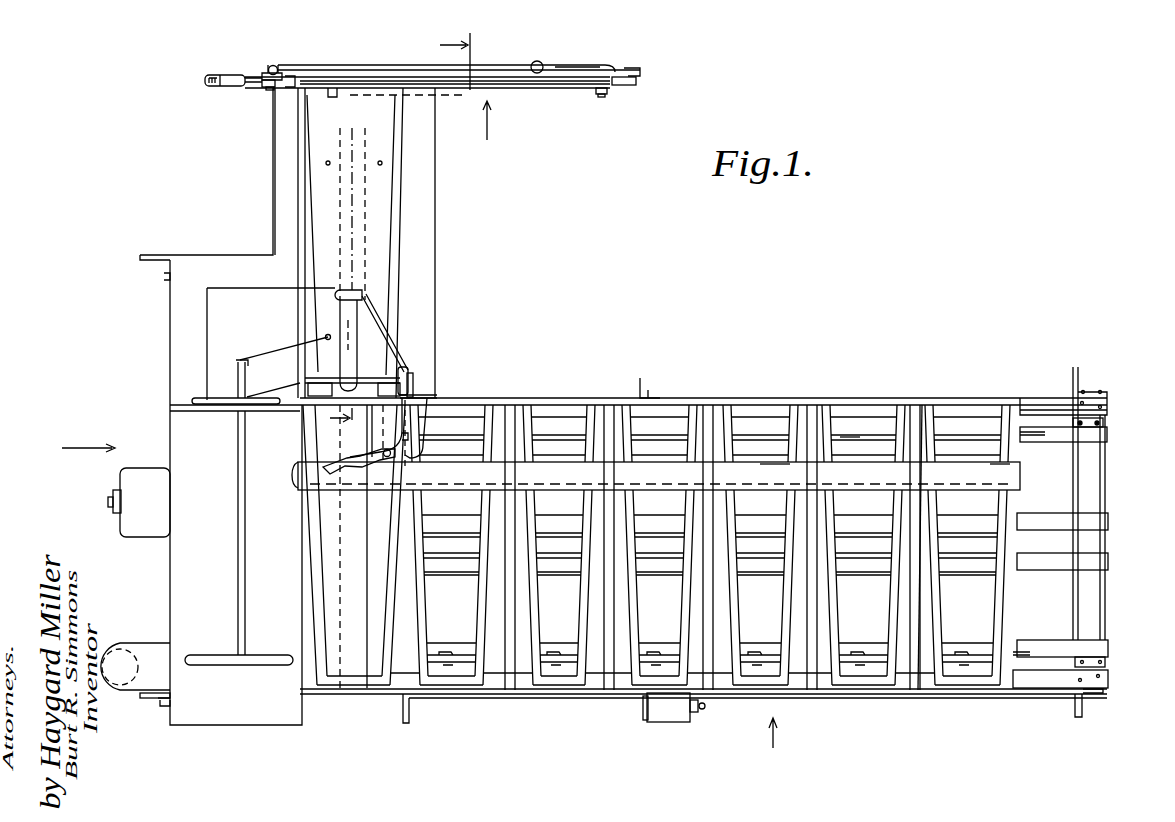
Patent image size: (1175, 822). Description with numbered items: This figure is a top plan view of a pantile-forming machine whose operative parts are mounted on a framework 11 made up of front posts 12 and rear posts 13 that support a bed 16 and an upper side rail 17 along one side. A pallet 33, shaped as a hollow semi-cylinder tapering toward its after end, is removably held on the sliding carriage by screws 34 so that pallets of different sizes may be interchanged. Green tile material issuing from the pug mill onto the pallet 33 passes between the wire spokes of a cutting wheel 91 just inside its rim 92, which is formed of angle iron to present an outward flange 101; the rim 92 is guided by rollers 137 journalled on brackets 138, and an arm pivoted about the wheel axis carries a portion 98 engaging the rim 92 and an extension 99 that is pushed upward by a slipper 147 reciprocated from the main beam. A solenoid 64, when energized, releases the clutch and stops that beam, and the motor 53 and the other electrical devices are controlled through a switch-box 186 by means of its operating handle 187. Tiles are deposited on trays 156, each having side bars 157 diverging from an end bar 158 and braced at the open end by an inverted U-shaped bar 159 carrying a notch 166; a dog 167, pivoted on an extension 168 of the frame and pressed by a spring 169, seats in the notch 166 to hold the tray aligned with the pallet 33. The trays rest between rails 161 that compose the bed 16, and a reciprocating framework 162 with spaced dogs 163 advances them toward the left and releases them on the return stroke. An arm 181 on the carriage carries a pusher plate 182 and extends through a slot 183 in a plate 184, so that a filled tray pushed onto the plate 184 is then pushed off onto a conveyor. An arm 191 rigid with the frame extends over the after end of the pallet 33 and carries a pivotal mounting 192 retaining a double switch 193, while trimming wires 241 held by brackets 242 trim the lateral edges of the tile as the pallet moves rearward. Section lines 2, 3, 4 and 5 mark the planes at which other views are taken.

The section line 2 is at (785, 741).
The section line 3 is at (76, 449).
The section line 4 is at (396, 234).
The section line 5 is at (494, 120).
The framework 11 is at (1066, 380).
The front posts 12 is at (149, 254).
The rear posts 13 is at (163, 706).
The bed 16 is at (1134, 409).
The upper side rail 17 is at (282, 172).
The pallet 33 is at (380, 225).
The screws 34 is at (325, 337).
The motor 53 is at (148, 522).
The solenoid 64 is at (122, 655).
The cutting wheel 91 is at (541, 89).
The rim 92 is at (638, 80).
The portion 98 is at (285, 88).
The extension 99 is at (247, 87).
The flange 101 is at (636, 75).
The rollers 137 is at (606, 94).
The bracket 138 is at (514, 65).
The slipper 147 is at (273, 65).
The tray 156 is at (614, 410).
The side bars 157 is at (922, 425).
The end bar 158 is at (962, 686).
The inverted U-shaped bar 159 is at (776, 462).
The rails 161 is at (1110, 682).
The framework 162 is at (1110, 437).
The dogs 163 is at (852, 436).
The notch 166 is at (578, 468).
The dog 167 is at (333, 464).
The extension 168 is at (420, 435).
The spring 169 is at (420, 458).
The arm 181 is at (258, 372).
The pusher plate 182 is at (210, 410).
The slot 183 is at (245, 565).
The plate 184 is at (235, 718).
The switch-box 186 is at (672, 718).
The operating handle 187 is at (706, 707).
The arm 191 is at (396, 346).
The pivotal mounting 192 is at (365, 292).
The double switch 193 is at (340, 308).
The trimming wires 241 is at (408, 375).
The bracket 242 is at (410, 385).